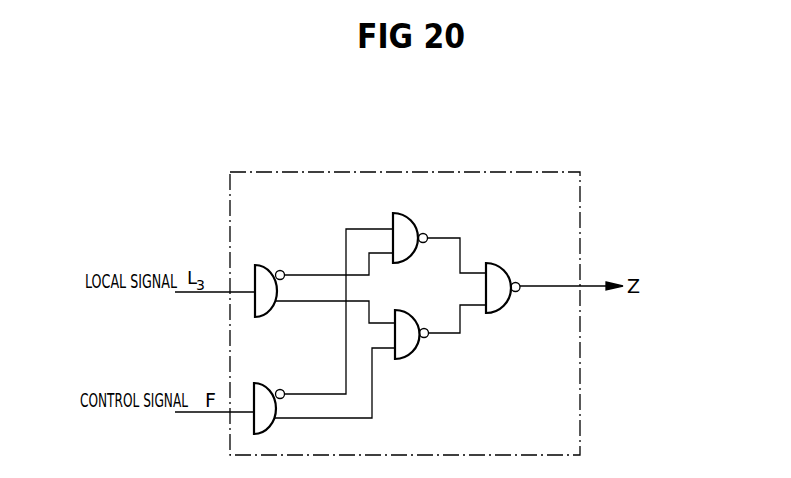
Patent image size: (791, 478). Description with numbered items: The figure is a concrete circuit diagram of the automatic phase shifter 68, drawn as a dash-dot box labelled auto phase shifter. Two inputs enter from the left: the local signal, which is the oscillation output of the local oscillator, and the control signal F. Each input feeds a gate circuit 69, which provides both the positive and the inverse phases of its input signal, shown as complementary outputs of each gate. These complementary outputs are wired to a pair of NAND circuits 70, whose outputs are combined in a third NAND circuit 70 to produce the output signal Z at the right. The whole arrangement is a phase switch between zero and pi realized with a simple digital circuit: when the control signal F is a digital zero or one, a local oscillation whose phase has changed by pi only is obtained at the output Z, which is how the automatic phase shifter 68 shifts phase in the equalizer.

The automatic phase shifter 68 is at (524, 171).
The gate circuit 69 is at (263, 263).
The NAND circuit 70 is at (409, 218).